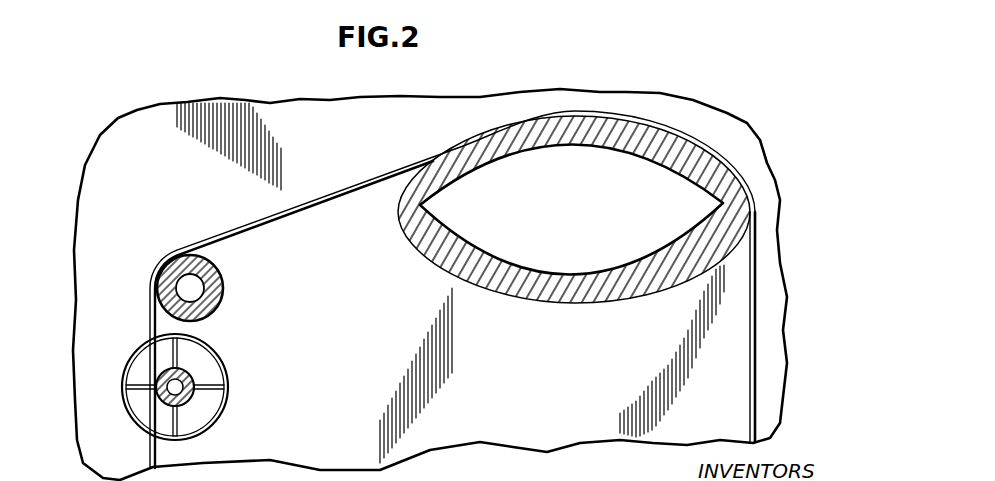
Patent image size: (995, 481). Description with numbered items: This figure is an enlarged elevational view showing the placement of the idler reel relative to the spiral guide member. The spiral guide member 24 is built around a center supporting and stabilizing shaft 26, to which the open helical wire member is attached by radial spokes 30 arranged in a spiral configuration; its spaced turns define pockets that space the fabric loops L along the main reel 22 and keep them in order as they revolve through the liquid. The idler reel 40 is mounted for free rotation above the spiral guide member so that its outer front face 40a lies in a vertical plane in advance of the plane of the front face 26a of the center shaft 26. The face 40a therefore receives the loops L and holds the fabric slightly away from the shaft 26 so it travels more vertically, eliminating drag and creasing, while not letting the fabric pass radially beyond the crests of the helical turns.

The main reel 22 is at (535, 298).
The spiral guide member 24 is at (189, 387).
The center supporting and stabilizing shaft 26 is at (171, 373).
The front face of the center shaft 26a is at (154, 389).
The radial spokes 30 is at (186, 421).
The idler reel 40 is at (222, 277).
The front face of the idler reel 40a is at (154, 291).
The loops L is at (422, 289).